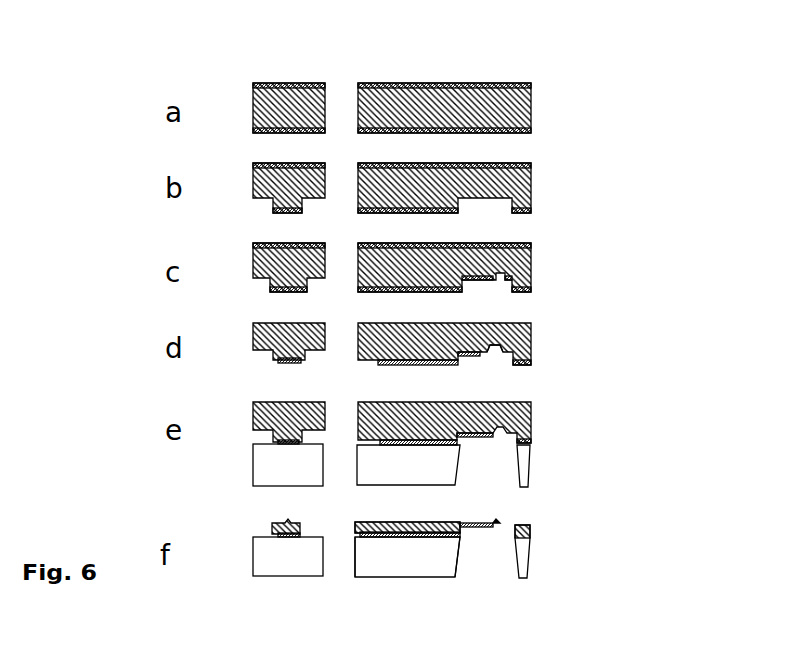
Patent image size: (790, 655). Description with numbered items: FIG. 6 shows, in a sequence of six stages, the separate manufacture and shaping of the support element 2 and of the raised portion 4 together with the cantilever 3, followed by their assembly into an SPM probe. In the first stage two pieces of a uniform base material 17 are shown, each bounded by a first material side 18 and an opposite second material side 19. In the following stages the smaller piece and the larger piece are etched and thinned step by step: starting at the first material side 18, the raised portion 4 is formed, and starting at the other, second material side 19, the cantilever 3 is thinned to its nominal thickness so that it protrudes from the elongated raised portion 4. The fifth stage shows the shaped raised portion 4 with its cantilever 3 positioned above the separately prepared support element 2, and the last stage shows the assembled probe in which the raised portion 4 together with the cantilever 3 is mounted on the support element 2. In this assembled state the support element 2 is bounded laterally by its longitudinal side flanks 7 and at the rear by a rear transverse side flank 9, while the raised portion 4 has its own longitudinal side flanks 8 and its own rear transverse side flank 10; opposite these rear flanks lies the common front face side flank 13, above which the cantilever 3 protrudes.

The base material 17 is at (512, 108).
The first material side 18 is at (455, 83).
The second material side 19 is at (495, 134).
The cantilever 3 is at (477, 357).
The raised portion 4 is at (459, 441).
The support element 2 is at (445, 468).
The longitudinal side flanks of the raised portion 8 is at (271, 530).
The rear transverse side flank of the raised portion 10 is at (354, 528).
The longitudinal side flanks of the support element 7 is at (251, 560).
The rear transverse side flank of the support element 9 is at (354, 565).
The front face side flank 13 is at (462, 557).